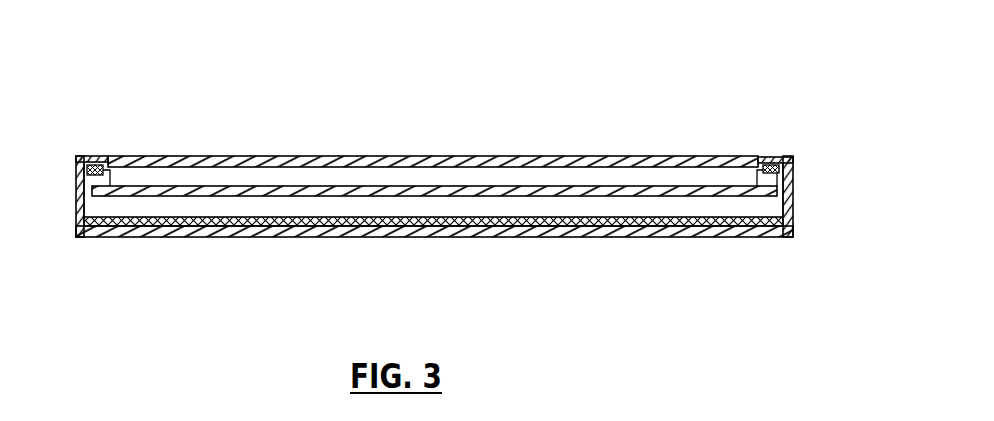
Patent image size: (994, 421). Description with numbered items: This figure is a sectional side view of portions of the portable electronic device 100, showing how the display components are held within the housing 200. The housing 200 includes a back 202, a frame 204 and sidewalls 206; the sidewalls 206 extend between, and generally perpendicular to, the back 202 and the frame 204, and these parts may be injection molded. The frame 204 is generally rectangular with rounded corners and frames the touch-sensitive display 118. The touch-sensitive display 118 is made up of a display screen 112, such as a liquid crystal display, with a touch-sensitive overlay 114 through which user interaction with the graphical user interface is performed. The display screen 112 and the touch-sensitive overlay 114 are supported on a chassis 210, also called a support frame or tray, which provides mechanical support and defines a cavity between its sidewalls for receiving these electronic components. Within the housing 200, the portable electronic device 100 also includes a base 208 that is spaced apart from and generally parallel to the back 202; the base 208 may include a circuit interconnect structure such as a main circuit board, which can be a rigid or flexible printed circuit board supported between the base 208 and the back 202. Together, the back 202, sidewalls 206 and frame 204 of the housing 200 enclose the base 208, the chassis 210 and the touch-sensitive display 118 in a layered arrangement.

The portable electronic device 100 is at (459, 169).
The touch-sensitive display 118 is at (434, 148).
The display screen 112 is at (348, 177).
The touch-sensitive overlay 114 is at (420, 160).
The housing 200 is at (459, 234).
The back 202 is at (495, 230).
The frame 204 is at (105, 157).
The sidewalls 206 is at (788, 215).
The base 208 is at (291, 224).
The chassis 210 is at (788, 178).